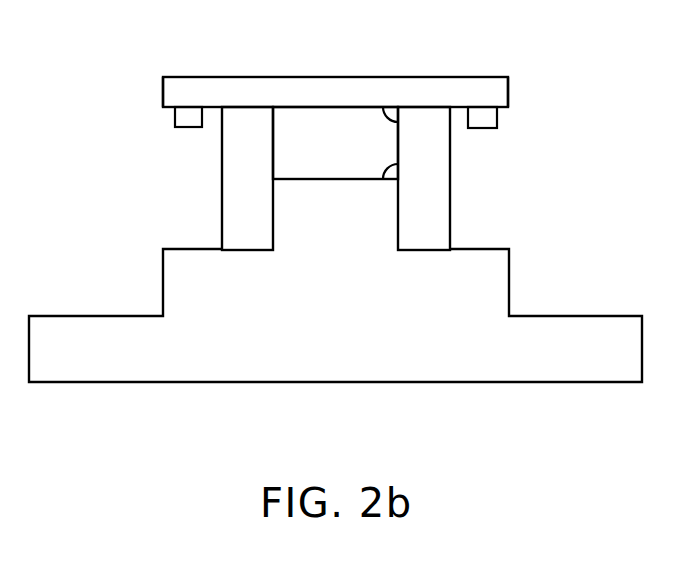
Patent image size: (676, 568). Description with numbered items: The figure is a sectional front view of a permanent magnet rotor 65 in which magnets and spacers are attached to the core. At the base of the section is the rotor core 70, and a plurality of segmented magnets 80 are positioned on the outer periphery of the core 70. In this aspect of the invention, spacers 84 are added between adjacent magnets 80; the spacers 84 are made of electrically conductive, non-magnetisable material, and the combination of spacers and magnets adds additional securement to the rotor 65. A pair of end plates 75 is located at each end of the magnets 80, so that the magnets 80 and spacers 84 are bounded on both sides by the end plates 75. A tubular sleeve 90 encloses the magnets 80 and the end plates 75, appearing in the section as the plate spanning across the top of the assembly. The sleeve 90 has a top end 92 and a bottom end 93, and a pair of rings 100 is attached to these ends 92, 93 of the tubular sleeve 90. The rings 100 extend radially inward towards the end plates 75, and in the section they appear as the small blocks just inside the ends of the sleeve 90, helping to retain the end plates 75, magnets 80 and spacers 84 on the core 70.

The permanent magnet rotor 65 is at (112, 410).
The rotor core 70 is at (386, 330).
The end plates 75 is at (222, 223).
The segmented magnets 80 is at (288, 148).
The spacers 84 is at (395, 172).
The tubular sleeve 90 is at (352, 79).
The top end of tubular sleeve 92 is at (508, 90).
The bottom end of tubular sleeve 93 is at (163, 90).
The rings 100 is at (173, 118).